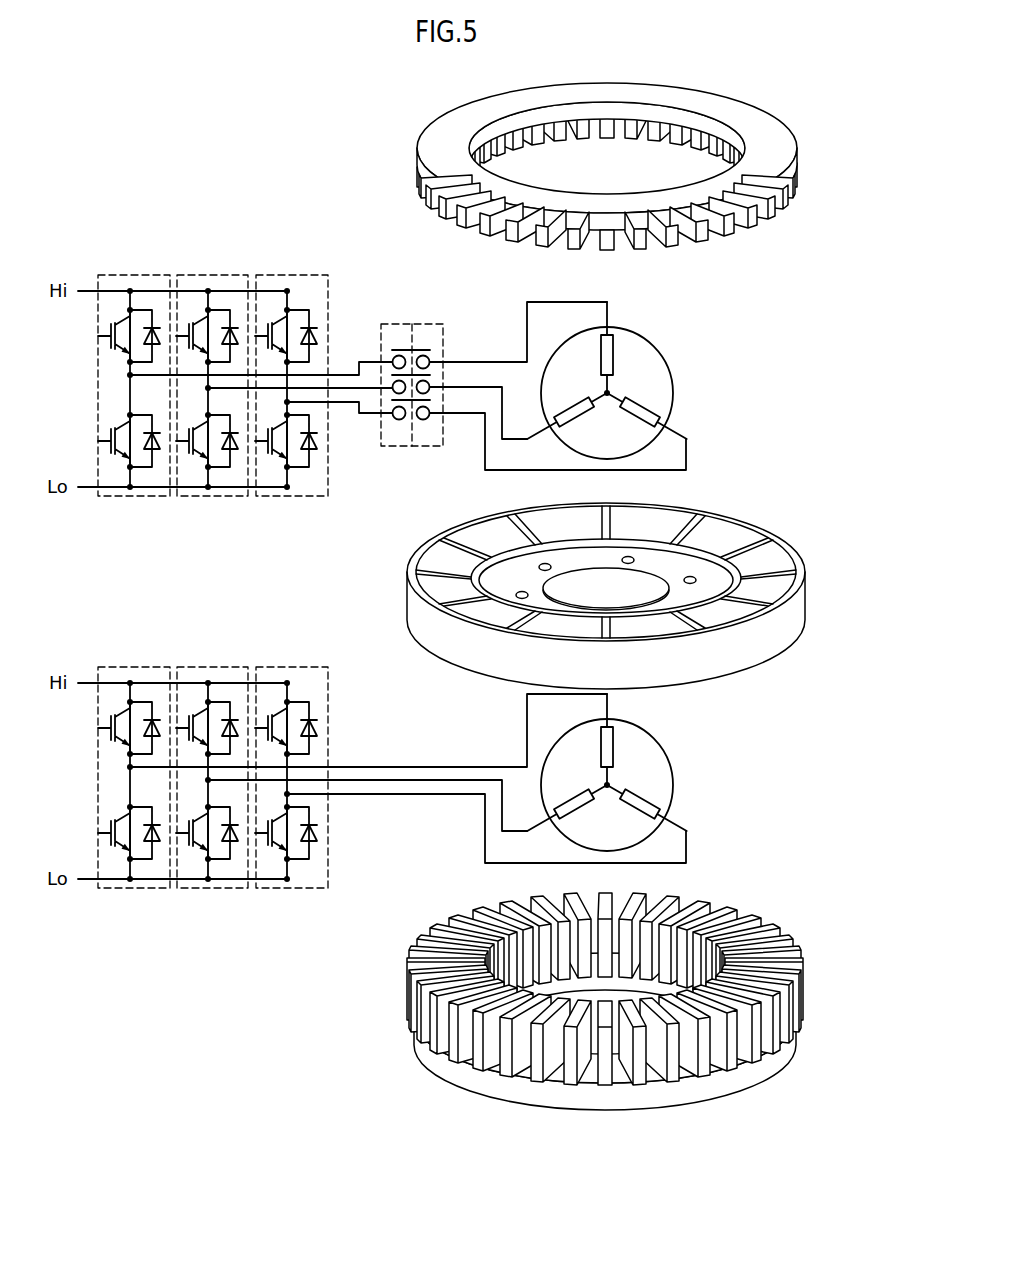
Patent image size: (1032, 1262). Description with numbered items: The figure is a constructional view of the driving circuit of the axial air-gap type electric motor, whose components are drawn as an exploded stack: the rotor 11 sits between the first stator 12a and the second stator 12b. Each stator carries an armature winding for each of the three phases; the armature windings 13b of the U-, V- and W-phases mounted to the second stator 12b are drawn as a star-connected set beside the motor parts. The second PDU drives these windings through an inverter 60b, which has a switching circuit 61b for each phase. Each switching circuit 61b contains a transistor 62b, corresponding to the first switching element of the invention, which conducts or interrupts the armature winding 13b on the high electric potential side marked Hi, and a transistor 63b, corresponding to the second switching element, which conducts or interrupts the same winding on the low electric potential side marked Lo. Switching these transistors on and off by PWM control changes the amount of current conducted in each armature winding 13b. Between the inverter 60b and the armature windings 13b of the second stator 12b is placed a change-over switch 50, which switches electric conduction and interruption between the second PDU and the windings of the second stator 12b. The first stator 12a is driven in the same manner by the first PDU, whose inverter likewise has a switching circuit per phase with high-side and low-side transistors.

The rotor 11 is at (748, 507).
The first stator 12a is at (745, 901).
The second stator 12b is at (702, 74).
The armature winding 13b is at (614, 348).
The change-over switch 50 is at (430, 322).
The inverter 60b is at (170, 545).
The switching circuit 61b is at (93, 545).
The transistor 62b is at (100, 343).
The transistor 63b is at (102, 431).